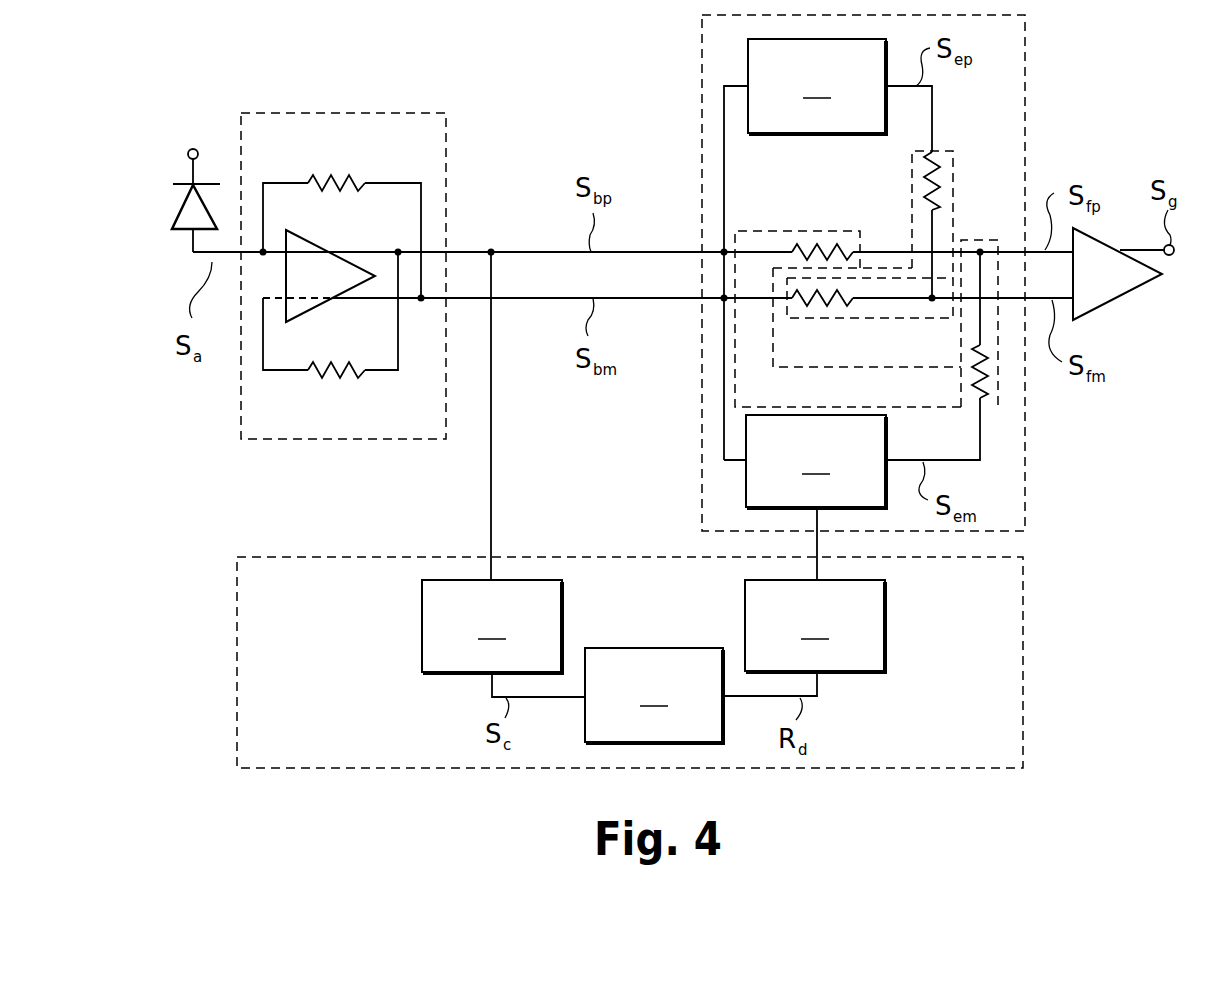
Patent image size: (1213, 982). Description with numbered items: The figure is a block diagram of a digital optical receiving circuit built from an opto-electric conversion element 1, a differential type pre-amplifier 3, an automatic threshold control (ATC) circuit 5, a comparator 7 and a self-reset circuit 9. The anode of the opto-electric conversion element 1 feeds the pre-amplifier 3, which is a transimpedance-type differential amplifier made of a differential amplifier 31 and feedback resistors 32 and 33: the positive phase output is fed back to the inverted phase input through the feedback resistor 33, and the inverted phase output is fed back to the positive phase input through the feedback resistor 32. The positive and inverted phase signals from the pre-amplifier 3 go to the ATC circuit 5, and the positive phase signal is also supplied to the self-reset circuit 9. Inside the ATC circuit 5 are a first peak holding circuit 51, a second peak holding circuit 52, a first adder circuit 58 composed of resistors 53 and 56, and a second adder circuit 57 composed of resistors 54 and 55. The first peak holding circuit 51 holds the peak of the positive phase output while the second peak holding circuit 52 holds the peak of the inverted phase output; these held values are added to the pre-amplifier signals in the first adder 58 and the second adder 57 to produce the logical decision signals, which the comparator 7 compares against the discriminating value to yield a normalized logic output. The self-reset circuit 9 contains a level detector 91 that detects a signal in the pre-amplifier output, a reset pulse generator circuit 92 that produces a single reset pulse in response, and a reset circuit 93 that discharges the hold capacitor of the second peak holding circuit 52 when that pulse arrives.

The opto-electric conversion element 1 is at (160, 240).
The differential type pre-amplifier 3 is at (450, 140).
The automatic threshold control (ATC) circuit 5 is at (1027, 65).
The comparator 7 is at (1123, 297).
The self-reset circuit 9 is at (1025, 680).
The differential amplifier 31 is at (322, 248).
The feedback resistor 32 is at (342, 166).
The feedback resistor 33 is at (330, 388).
The first peak holding circuit 51 is at (830, 249).
The second peak holding circuit 52 is at (854, 415).
The resistor 53 is at (830, 238).
The resistor 54 is at (822, 312).
The resistor 55 is at (952, 180).
The resistor 56 is at (988, 400).
The second adder circuit 57 is at (910, 194).
The first adder circuit 58 is at (786, 228).
The level detector 91 is at (503, 638).
The reset pulse generator circuit 92 is at (654, 695).
The reset circuit 93 is at (804, 638).